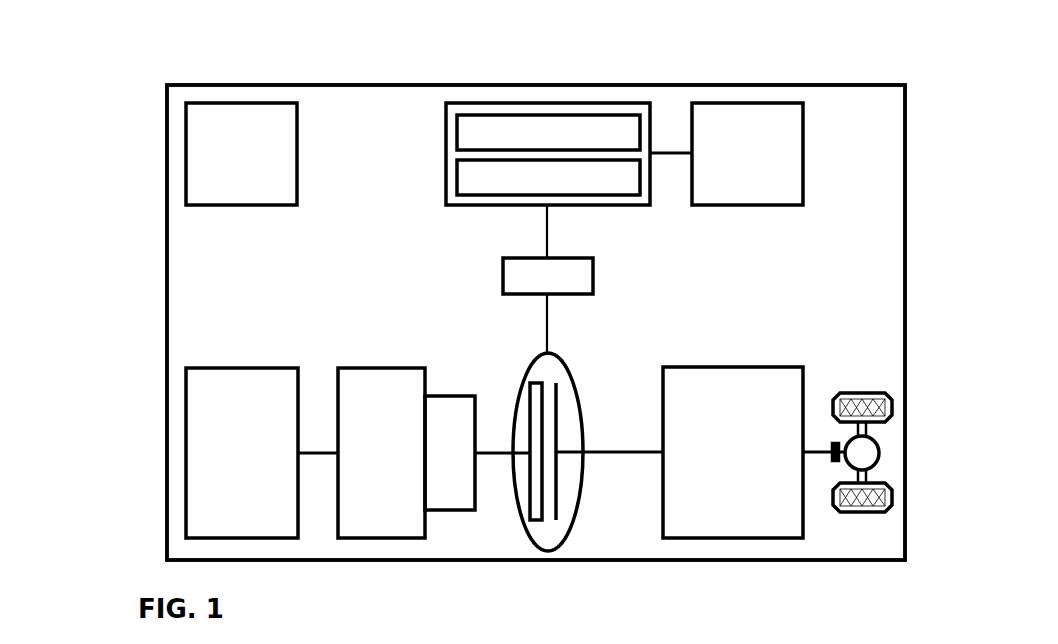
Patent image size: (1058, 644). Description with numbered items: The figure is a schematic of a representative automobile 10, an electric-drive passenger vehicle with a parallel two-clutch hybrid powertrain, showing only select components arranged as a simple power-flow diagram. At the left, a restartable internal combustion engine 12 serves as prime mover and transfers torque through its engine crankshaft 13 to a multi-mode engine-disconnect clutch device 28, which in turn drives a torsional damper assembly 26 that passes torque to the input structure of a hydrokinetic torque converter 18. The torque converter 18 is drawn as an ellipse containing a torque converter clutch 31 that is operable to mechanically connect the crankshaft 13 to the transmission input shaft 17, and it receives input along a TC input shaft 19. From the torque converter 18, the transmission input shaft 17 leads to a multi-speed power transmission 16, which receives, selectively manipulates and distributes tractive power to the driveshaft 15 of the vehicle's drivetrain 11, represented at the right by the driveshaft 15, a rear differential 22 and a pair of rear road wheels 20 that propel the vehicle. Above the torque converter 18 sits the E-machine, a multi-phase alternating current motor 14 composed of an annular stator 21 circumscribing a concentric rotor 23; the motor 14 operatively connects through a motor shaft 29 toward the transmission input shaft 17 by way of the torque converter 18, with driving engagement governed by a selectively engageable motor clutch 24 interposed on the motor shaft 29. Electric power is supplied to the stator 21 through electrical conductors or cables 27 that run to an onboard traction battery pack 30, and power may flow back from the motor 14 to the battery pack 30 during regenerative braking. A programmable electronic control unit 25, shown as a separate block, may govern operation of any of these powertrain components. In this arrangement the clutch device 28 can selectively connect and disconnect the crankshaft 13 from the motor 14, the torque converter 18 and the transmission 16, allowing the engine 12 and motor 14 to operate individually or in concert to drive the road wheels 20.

The automobile 10 is at (150, 62).
The drivetrain 11 is at (884, 272).
The engine 12 is at (198, 368).
The engine crankshaft 13 is at (315, 453).
The motor 14 is at (462, 103).
The driveshaft 15 is at (822, 450).
The multi-speed power transmission 16 is at (673, 367).
The transmission input shaft 17 is at (617, 452).
The torque converter 18 is at (577, 507).
The TC input shaft 19 is at (493, 453).
The road wheels 20 is at (858, 393).
The stator 21 is at (457, 122).
The rear differential 22 is at (880, 450).
The rotor 23 is at (457, 163).
The motor clutch 24 is at (503, 262).
The electronic control unit 25 is at (213, 103).
The torsional damper assembly 26 is at (445, 396).
The electrical conductors or cables 27 is at (665, 153).
The engine-disconnect clutch device 28 is at (360, 368).
The motor shaft 29 is at (547, 228).
The traction battery pack 30 is at (722, 103).
The torque converter clutch 31 is at (530, 508).